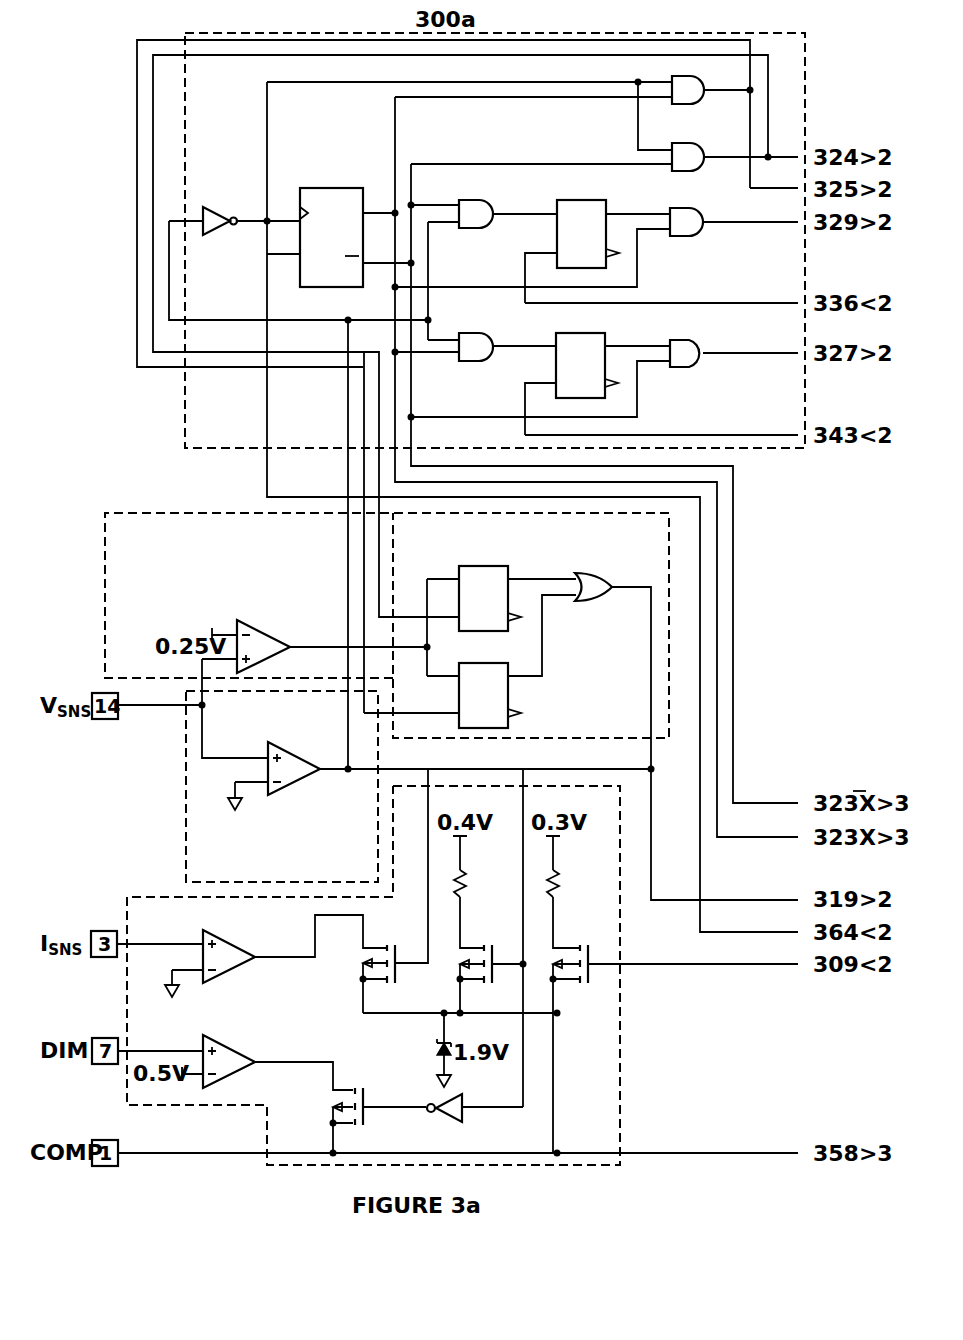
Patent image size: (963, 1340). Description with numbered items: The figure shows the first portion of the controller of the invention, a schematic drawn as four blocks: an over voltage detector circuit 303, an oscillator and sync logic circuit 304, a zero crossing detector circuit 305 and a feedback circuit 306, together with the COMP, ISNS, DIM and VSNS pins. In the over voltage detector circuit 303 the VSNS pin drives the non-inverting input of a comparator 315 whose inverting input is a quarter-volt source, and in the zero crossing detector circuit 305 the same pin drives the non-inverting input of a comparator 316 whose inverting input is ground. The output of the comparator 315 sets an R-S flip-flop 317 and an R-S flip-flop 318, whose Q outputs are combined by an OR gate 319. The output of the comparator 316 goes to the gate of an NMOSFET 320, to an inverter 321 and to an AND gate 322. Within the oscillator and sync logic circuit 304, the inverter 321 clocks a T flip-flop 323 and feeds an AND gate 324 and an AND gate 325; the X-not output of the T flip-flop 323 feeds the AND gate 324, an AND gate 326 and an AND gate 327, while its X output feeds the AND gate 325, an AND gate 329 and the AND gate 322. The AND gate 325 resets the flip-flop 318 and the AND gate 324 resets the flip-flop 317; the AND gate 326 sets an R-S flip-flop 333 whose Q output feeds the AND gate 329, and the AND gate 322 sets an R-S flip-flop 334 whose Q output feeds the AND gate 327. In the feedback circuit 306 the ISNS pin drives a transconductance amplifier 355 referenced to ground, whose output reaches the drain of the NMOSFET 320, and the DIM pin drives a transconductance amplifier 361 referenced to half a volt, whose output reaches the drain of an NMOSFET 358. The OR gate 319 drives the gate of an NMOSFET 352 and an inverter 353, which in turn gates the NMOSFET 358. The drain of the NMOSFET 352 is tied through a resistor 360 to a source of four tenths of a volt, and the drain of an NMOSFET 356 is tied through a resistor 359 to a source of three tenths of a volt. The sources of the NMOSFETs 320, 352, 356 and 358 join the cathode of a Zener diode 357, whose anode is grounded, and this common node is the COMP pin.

The over voltage detector circuit 303 is at (195, 510).
The oscillator and sync logic circuit 304 is at (185, 384).
The zero crossing detector circuit 305 is at (186, 802).
The feedback circuit 306 is at (127, 897).
The comparator 315 is at (270, 632).
The comparator 316 is at (304, 750).
The R-S flip-flop 317 is at (512, 697).
The R-S flip-flop 318 is at (499, 566).
The OR gate 319 is at (603, 575).
The NMOSFET 320 is at (386, 945).
The inverter 321 is at (214, 207).
The AND gate 322 is at (494, 337).
The T flip-flop 323 is at (331, 186).
The AND gate 324 is at (704, 171).
The AND gate 325 is at (704, 104).
The AND gate 326 is at (495, 200).
The AND gate 327 is at (703, 367).
The AND gate 329 is at (703, 236).
The R-S flip-flop 333 is at (603, 200).
The R-S flip-flop 334 is at (603, 338).
The NMOSFET 352 is at (484, 945).
The inverter 353 is at (438, 1125).
The transconductance amplifier 355 is at (242, 945).
The NMOSFET 356 is at (580, 945).
The Zener diode 357 is at (424, 1063).
The NMOSFET 358 is at (370, 1080).
The resistor 359 is at (578, 881).
The resistor 360 is at (484, 881).
The transconductance amplifier 361 is at (238, 1048).